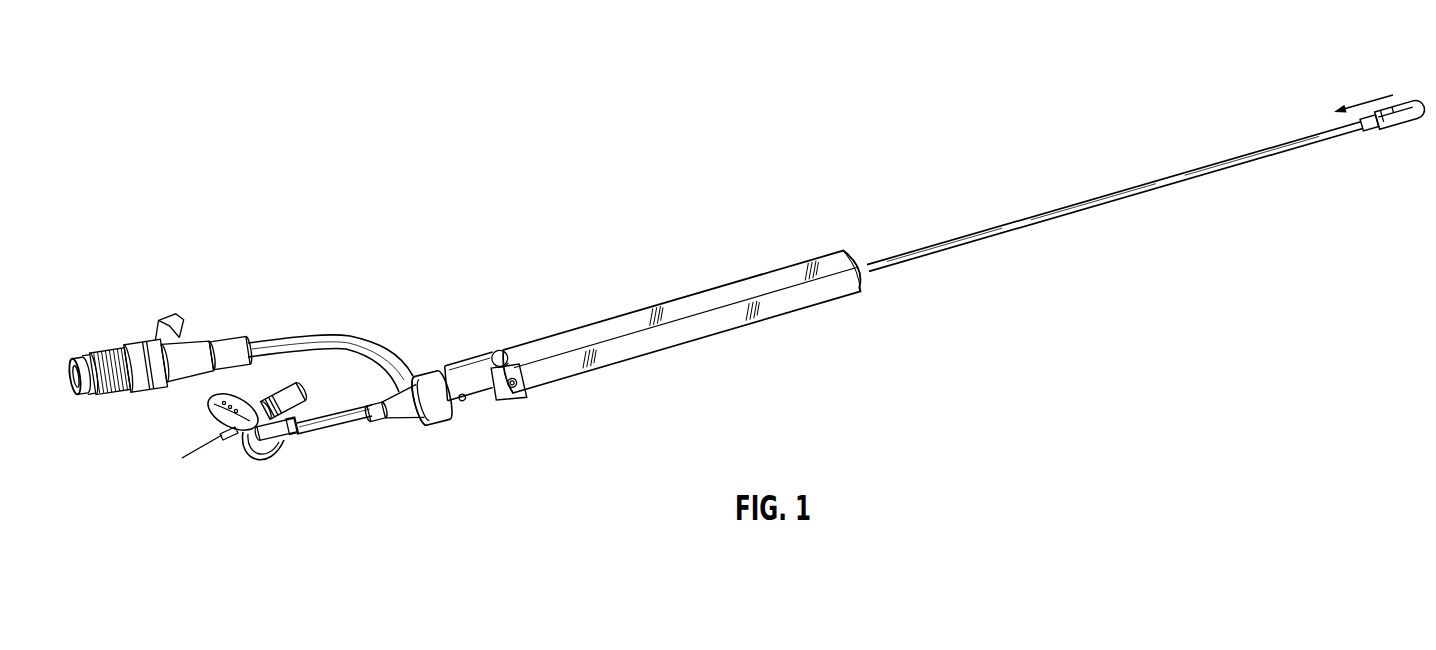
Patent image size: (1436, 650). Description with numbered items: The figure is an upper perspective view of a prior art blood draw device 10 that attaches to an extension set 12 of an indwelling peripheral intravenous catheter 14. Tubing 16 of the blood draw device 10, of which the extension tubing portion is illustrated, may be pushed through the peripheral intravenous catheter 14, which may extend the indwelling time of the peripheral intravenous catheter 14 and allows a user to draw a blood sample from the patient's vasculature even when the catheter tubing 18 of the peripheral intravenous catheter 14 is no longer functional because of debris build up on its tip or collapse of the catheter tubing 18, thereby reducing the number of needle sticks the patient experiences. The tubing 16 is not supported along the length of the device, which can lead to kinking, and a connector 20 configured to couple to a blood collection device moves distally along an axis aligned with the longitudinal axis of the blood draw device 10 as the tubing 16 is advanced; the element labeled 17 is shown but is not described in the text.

The blood draw device 10 is at (187, 110).
The extension set 12 is at (392, 402).
The peripheral intravenous catheter 14 is at (253, 417).
The tubing 16 is at (1105, 210).
The handle 17 is at (700, 292).
The catheter tubing 18 is at (197, 455).
The connector 20 is at (1410, 99).